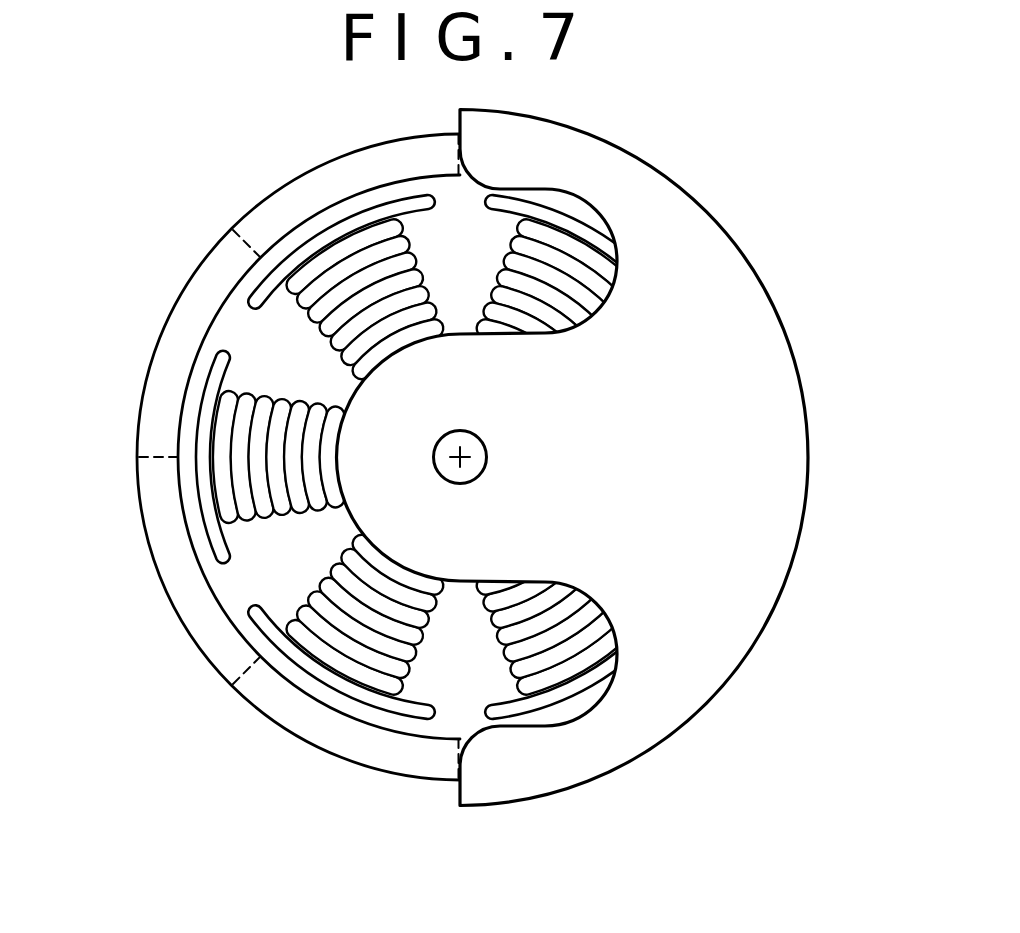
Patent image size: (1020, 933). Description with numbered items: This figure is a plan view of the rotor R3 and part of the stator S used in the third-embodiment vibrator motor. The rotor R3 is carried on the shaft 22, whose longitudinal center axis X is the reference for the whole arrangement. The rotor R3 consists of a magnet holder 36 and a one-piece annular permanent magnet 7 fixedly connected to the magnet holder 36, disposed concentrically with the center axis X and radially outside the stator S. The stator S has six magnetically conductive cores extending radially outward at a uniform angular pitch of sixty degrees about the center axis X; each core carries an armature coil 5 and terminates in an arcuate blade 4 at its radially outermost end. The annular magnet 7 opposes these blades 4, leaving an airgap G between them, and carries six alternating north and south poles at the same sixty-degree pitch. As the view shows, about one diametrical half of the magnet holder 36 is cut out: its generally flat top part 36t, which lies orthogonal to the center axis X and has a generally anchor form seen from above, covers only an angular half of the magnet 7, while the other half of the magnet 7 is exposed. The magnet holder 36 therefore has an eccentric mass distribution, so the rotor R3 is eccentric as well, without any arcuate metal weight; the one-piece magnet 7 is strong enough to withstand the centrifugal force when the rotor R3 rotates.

The annular permanent magnet 7 is at (273, 222).
The rotor R3 is at (638, 445).
The magnet holder 36 is at (638, 458).
The top part 36t is at (750, 415).
The shaft 22 is at (480, 448).
The center axis X is at (466, 462).
The stator S is at (203, 535).
The airgap G is at (278, 663).
The armature coil 5 is at (358, 633).
The blade 4 is at (403, 707).